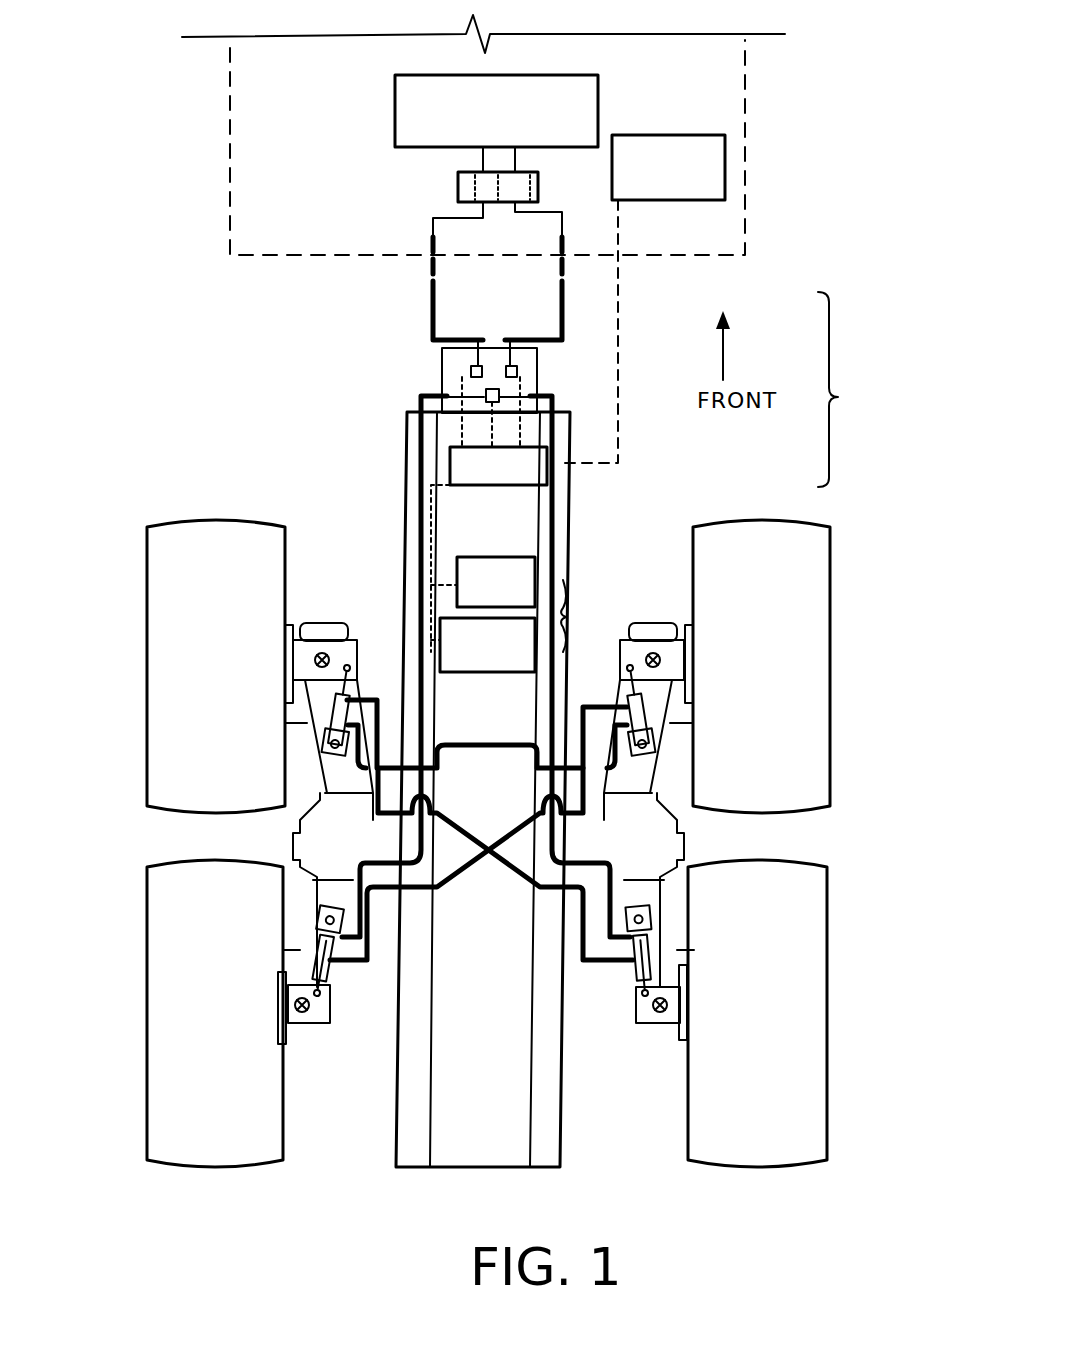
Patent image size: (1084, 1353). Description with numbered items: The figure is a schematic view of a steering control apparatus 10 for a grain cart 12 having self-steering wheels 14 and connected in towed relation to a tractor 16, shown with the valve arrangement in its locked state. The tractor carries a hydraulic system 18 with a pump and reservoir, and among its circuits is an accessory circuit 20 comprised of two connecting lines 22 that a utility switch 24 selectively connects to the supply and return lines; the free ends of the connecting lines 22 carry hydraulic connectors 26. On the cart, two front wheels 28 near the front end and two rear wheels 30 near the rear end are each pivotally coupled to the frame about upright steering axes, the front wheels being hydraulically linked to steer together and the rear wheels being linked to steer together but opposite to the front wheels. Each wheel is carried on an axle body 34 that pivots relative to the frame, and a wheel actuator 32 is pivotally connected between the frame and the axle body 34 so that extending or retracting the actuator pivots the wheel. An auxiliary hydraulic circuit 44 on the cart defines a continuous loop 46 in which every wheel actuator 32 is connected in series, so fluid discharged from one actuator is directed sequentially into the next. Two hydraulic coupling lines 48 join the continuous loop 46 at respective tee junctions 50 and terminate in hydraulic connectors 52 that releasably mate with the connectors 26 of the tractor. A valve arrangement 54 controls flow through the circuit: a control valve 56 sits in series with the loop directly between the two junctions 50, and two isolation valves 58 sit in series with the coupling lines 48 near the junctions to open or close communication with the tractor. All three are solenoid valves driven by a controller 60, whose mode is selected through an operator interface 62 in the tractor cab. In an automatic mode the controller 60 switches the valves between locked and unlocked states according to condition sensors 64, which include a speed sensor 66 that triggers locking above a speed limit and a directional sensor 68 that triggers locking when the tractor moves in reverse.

The steering control apparatus 10 is at (851, 389).
The grain cart 12 is at (407, 580).
The self-steering wheels 14 is at (138, 656).
The tractor 16 is at (748, 122).
The hydraulic system 18 is at (558, 75).
The accessory circuit 20 is at (463, 160).
The connecting lines 22 is at (440, 216).
The utility switch 24 is at (540, 178).
The hydraulic connectors 26 is at (436, 244).
The front wheels 28 is at (160, 557).
The rear wheels 30 is at (160, 890).
The wheel actuators 32 is at (337, 712).
The axle body 34 is at (302, 635).
The auxiliary hydraulic circuit 44 is at (476, 968).
The continuous loop 46 is at (555, 500).
The hydraulic coupling lines 48 is at (433, 318).
The tee junction 50 is at (440, 397).
The hydraulic connector 52 is at (428, 265).
The valve arrangement 54 is at (428, 352).
The control valve 56 is at (488, 402).
The isolation valves 58 is at (470, 372).
The controller 60 is at (460, 486).
The operator interface 62 is at (695, 133).
The condition sensors 64 is at (568, 605).
The speed sensor 66 is at (415, 580).
The directional sensor 68 is at (462, 672).